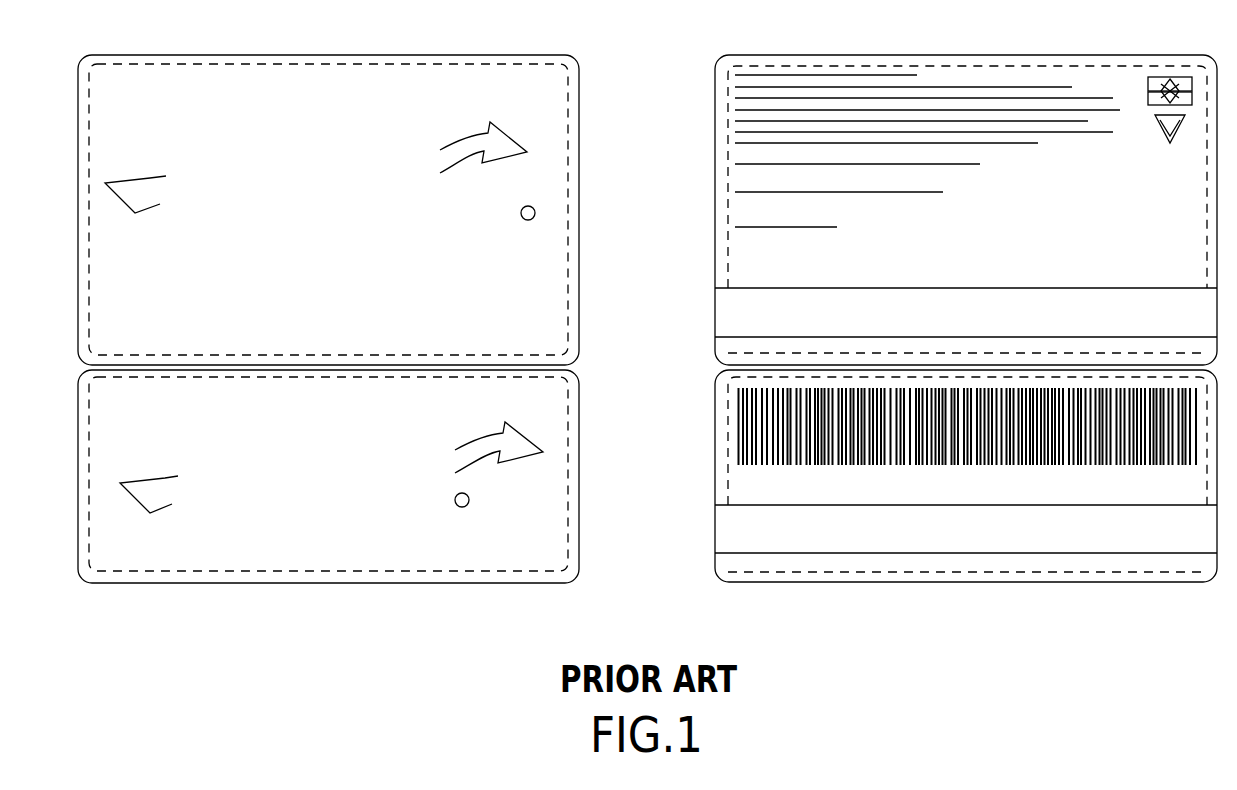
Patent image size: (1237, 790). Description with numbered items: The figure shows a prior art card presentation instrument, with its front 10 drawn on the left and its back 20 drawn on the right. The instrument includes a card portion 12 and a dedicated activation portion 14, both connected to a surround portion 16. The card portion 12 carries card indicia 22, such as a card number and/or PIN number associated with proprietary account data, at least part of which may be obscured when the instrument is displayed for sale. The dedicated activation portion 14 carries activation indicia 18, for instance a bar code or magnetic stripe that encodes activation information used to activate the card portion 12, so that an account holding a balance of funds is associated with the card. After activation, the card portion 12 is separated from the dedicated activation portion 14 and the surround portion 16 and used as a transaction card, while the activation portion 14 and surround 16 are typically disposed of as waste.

The front 10 is at (328, 340).
The card portion 12 is at (151, 333).
The dedicated activation portion 14 is at (149, 418).
The surround portion 16 is at (292, 55).
The activation indicia 18 is at (960, 465).
The back 20 is at (958, 593).
The card indicia 22 is at (957, 192).